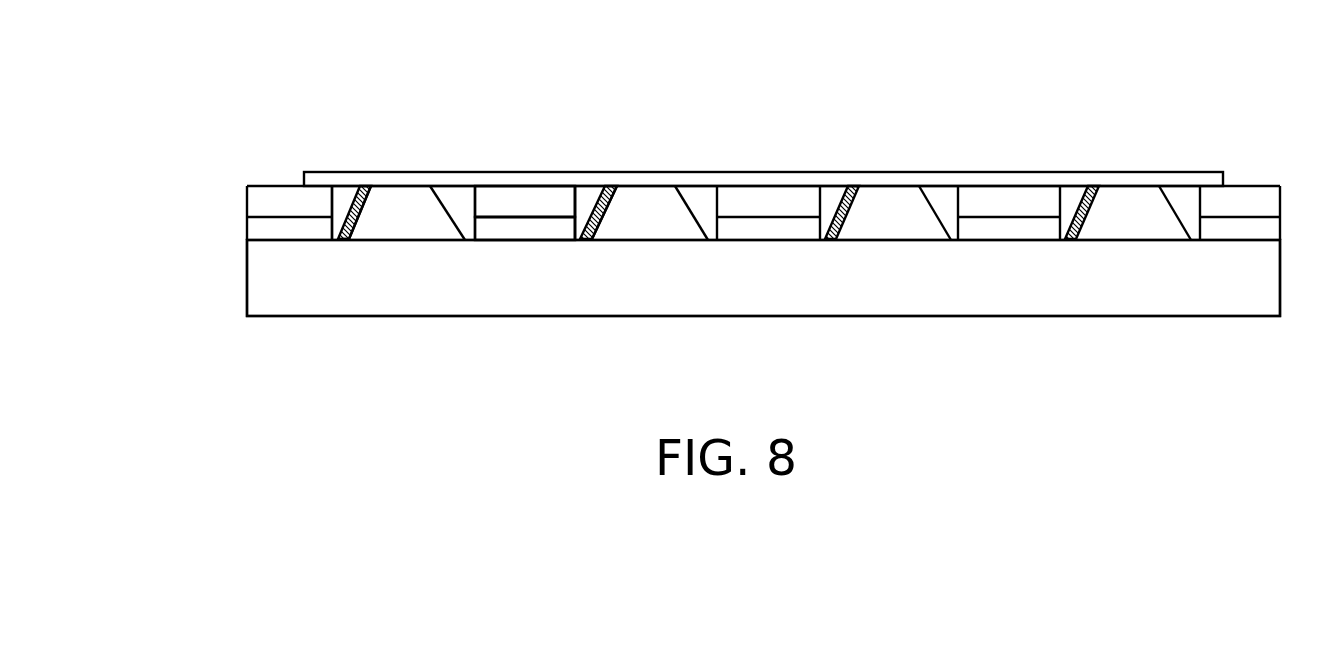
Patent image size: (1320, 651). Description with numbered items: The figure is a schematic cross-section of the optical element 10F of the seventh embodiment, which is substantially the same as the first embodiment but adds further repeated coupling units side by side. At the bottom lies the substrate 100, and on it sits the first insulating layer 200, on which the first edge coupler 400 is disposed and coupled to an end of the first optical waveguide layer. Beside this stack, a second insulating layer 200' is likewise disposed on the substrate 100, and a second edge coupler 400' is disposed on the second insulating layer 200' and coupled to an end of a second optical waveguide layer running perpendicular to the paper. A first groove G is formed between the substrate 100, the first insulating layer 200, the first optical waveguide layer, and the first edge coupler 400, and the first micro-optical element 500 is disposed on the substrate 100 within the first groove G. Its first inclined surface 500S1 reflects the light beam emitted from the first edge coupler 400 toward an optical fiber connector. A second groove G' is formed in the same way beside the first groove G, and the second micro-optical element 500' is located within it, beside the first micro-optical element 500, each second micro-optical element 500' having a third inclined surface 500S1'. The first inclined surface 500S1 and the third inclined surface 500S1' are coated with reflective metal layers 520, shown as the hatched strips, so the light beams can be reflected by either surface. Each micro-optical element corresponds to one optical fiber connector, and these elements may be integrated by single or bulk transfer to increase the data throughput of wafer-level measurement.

The substrate 100 is at (258, 285).
The first insulating layer 200 is at (717, 239).
The first edge coupler 400 is at (717, 205).
The second edge coupler 400' is at (525, 162).
The second insulating layer 200' is at (525, 300).
The first micro-optical element 500 is at (401, 174).
The first inclined surface 500S1 is at (388, 147).
The first groove G is at (346, 174).
The reflective metal layer 520 is at (345, 237).
The second micro-optical element 500' is at (644, 174).
The third inclined surface 500S1' is at (638, 140).
The second groove G' is at (586, 168).
The optical element 10F is at (1278, 378).